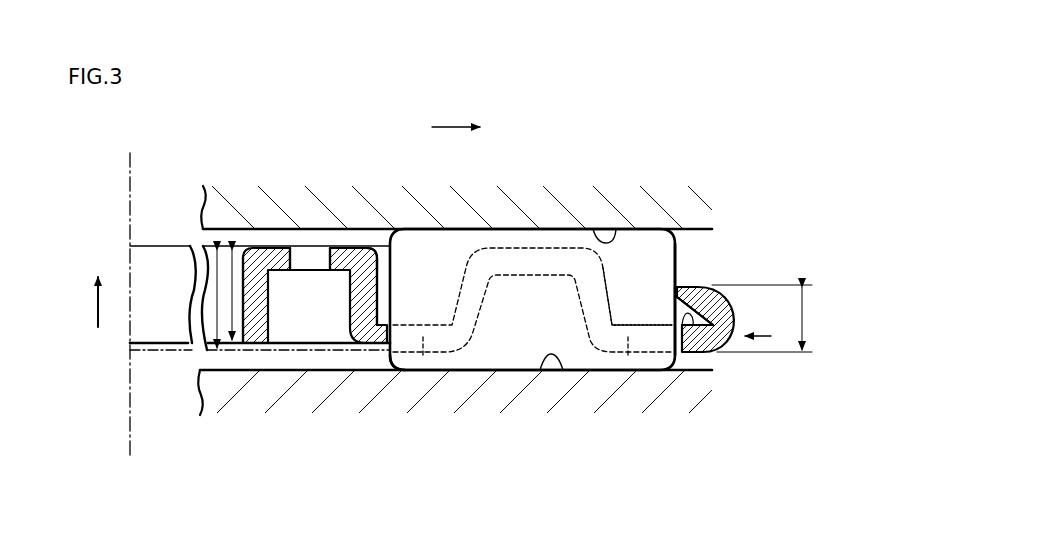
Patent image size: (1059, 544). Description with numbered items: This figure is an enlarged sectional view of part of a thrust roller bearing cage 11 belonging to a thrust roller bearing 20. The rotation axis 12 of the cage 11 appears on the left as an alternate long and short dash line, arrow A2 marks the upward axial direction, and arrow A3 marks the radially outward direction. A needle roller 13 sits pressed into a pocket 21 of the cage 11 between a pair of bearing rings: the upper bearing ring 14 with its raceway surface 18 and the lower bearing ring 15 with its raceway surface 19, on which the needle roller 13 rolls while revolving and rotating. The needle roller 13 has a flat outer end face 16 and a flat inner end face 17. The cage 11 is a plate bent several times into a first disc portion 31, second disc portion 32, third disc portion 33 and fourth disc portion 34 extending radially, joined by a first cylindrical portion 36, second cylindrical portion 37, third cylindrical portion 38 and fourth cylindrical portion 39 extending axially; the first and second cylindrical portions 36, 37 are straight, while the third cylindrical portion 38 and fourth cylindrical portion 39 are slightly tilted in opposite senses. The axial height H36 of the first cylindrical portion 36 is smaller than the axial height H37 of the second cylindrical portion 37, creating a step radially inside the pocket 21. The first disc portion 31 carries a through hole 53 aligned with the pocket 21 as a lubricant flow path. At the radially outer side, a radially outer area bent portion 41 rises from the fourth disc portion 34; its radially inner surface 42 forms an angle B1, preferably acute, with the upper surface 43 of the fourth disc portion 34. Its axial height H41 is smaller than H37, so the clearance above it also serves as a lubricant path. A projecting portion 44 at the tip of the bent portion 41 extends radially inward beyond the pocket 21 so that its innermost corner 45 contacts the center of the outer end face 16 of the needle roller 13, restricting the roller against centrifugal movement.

The thrust roller bearing cage 11 is at (771, 336).
The rotation axis 12 is at (132, 423).
The needle roller 13 is at (493, 352).
The upper bearing ring 14 is at (690, 207).
The lower bearing ring 15 is at (690, 395).
The outer end face 16 is at (677, 264).
The inner end face 17 is at (372, 250).
The raceway surface 18 is at (598, 232).
The raceway surface 19 is at (539, 371).
The thrust roller bearing 20 is at (714, 156).
The pocket 21 is at (387, 374).
The first disc portion 31 is at (281, 254).
The second disc portion 32 is at (423, 358).
The third disc portion 33 is at (529, 263).
The fourth disc portion 34 is at (628, 358).
The first cylindrical portion 36 is at (269, 333).
The second cylindrical portion 37 is at (352, 309).
The third cylindrical portion 38 is at (471, 303).
The fourth cylindrical portion 39 is at (599, 297).
The radially outer area bent portion 41 is at (710, 285).
The radially inner surface 42 is at (678, 302).
The upper surface 43 is at (680, 327).
The projecting portion 44 is at (678, 287).
The corner 45 is at (675, 298).
The through hole 53 is at (313, 262).
The arrow A2 is at (108, 302).
The arrow A3 is at (456, 118).
The angle B1 is at (692, 304).
The axial height H36 is at (233, 293).
The axial height H37 is at (215, 297).
The axial height H41 is at (808, 319).